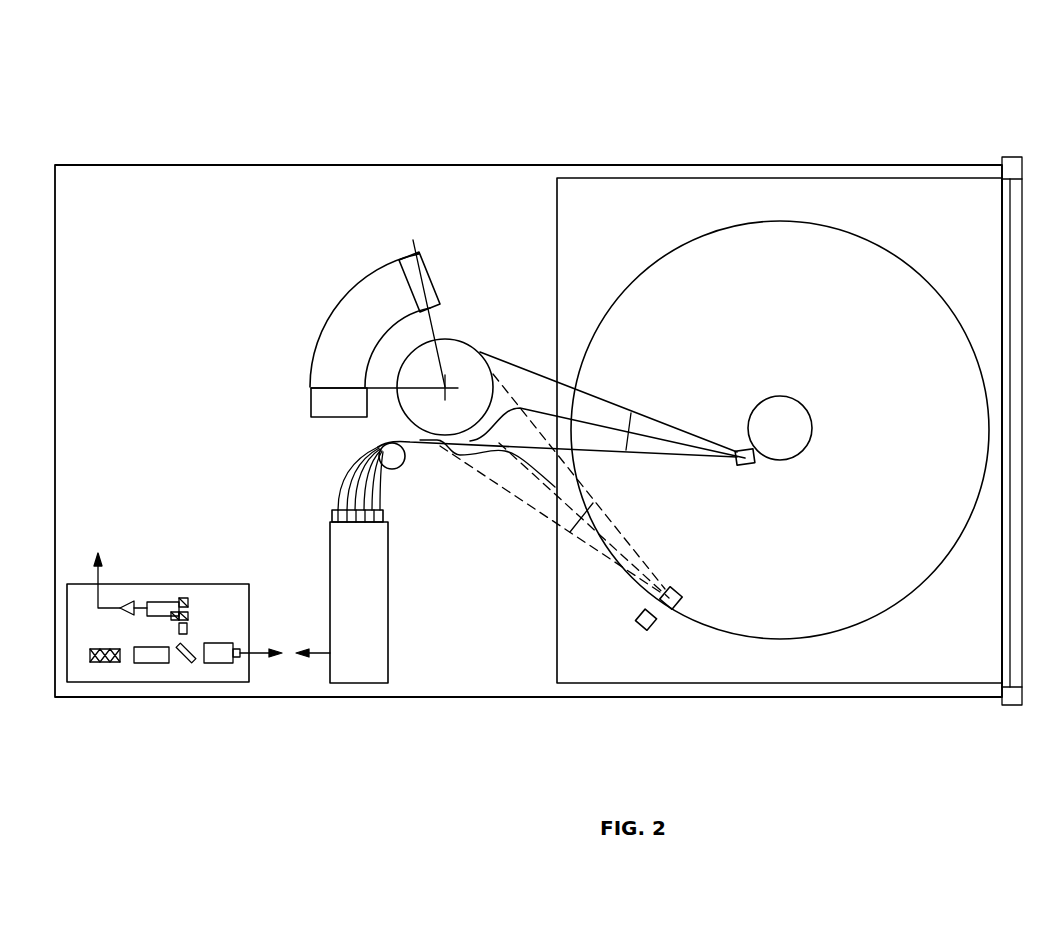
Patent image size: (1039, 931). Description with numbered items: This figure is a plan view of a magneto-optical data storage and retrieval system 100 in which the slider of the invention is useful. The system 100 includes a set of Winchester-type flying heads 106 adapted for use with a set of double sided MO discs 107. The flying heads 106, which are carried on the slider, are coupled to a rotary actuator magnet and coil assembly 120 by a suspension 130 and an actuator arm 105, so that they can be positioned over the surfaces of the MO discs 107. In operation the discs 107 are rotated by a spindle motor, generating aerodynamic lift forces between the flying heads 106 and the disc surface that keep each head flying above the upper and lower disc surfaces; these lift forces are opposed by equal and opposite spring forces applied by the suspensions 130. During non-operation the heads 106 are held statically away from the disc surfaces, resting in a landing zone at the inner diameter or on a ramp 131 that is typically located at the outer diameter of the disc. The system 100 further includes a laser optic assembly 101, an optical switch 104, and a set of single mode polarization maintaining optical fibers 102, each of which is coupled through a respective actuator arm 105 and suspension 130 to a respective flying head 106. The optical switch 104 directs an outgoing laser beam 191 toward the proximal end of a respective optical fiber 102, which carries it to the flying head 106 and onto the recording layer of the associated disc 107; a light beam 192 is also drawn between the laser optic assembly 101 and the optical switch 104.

The magneto-optical data storage and retrieval system 100 is at (783, 61).
The laser optic assembly 101 is at (118, 684).
The single mode PM optical fibers 102 is at (342, 463).
The optical switch 104 is at (393, 587).
The actuator arm 105 is at (607, 412).
The flying heads 106 is at (752, 468).
The MO discs 107 is at (800, 218).
The rotary actuator magnet and coil assembly 120 is at (398, 263).
The suspension 130 is at (683, 433).
The ramp 131 is at (652, 629).
The outgoing laser beam 191 is at (270, 660).
The returning light beam 192 is at (305, 660).